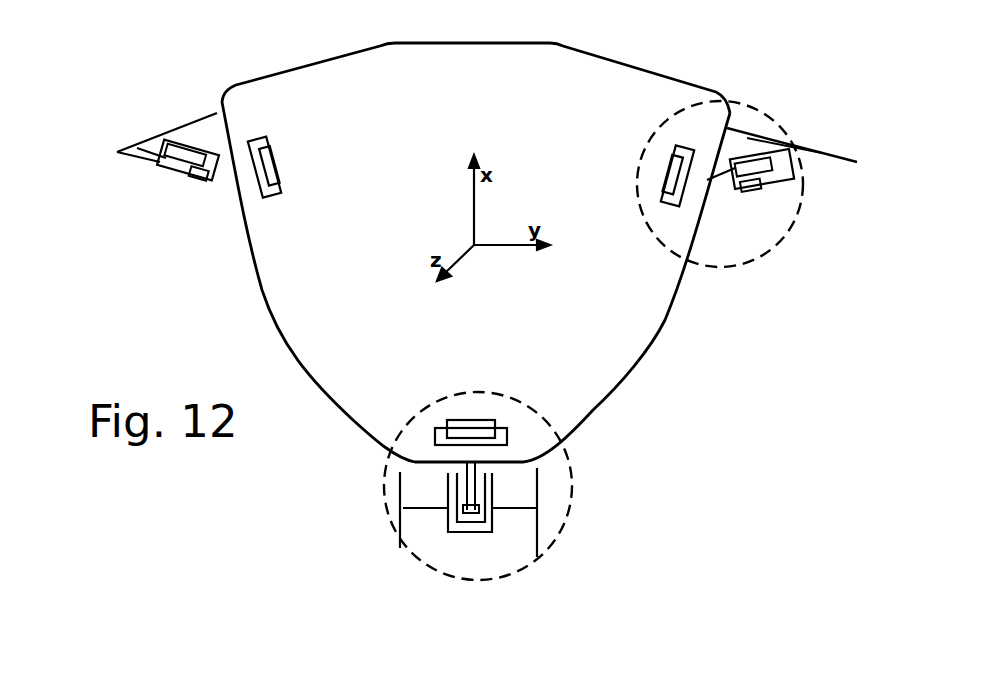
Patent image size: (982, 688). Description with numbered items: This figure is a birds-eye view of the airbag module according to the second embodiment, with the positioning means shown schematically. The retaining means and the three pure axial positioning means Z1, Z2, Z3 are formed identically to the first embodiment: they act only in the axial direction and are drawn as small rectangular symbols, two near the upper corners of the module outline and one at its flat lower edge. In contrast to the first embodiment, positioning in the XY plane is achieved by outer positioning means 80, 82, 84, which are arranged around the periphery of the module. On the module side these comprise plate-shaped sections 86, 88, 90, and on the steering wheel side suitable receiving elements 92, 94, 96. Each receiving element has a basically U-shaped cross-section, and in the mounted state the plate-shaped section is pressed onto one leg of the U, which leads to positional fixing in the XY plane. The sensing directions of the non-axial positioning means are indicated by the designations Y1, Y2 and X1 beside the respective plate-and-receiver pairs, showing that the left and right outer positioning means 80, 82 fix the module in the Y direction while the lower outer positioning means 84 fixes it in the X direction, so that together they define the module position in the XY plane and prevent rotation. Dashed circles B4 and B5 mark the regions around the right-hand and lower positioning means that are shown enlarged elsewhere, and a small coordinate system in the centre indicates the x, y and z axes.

The outer positioning means 80 is at (205, 128).
The outer positioning means 82 is at (740, 132).
The outer positioning means 84 is at (421, 486).
The plate-shaped section 86 is at (195, 178).
The plate-shaped section 88 is at (778, 160).
The plate-shaped section 90 is at (450, 523).
The receiving element 92 is at (163, 160).
The receiving element 94 is at (763, 198).
The receiving element 96 is at (538, 495).
The detail region B4 is at (753, 240).
The detail region B5 is at (557, 513).
The X positioning means X1 is at (498, 487).
The Y positioning means Y1 is at (194, 179).
The acceleration sensor Y2 is at (757, 189).
The axial positioning means Z1 is at (268, 182).
The axial positioning means Z2 is at (675, 191).
The axial positioning means Z3 is at (491, 437).